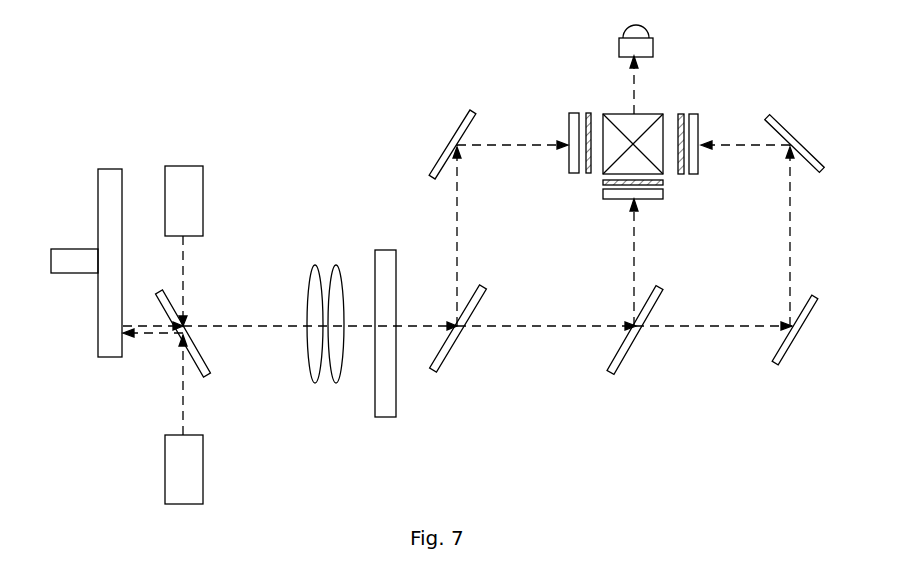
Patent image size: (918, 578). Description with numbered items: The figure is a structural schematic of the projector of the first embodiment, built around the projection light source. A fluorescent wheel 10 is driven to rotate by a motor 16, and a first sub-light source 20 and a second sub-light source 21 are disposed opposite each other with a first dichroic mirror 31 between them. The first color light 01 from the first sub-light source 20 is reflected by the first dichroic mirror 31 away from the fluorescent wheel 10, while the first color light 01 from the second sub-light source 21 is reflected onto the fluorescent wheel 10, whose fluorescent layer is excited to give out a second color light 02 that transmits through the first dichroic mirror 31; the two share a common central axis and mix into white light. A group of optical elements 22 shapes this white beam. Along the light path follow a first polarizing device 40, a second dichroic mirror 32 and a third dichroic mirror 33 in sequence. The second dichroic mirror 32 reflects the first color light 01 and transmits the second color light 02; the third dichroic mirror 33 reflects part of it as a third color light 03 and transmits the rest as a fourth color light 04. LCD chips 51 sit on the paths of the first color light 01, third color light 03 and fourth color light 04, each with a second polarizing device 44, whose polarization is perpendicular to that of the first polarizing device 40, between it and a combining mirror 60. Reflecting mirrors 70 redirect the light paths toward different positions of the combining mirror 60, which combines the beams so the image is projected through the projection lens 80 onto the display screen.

The fluorescent wheel 10 is at (107, 182).
The motor 16 is at (74, 266).
The first sub-light source 20 is at (185, 213).
The second sub-light source 21 is at (185, 470).
The group of optical elements 22 is at (350, 262).
The first dichroic mirror 31 is at (203, 359).
The second dichroic mirror 32 is at (455, 372).
The third dichroic mirror 33 is at (620, 362).
The first polarizing device 40 is at (380, 400).
The second polarizing device 44 is at (590, 118).
The LCD chip 51 is at (573, 115).
The combining mirror 60 is at (655, 135).
The reflecting mirror 70 is at (466, 113).
The projection lens 80 is at (643, 47).
The first color light 01 is at (187, 272).
The second color light 02 is at (133, 330).
The third color light 03 is at (631, 243).
The fourth color light 04 is at (740, 326).